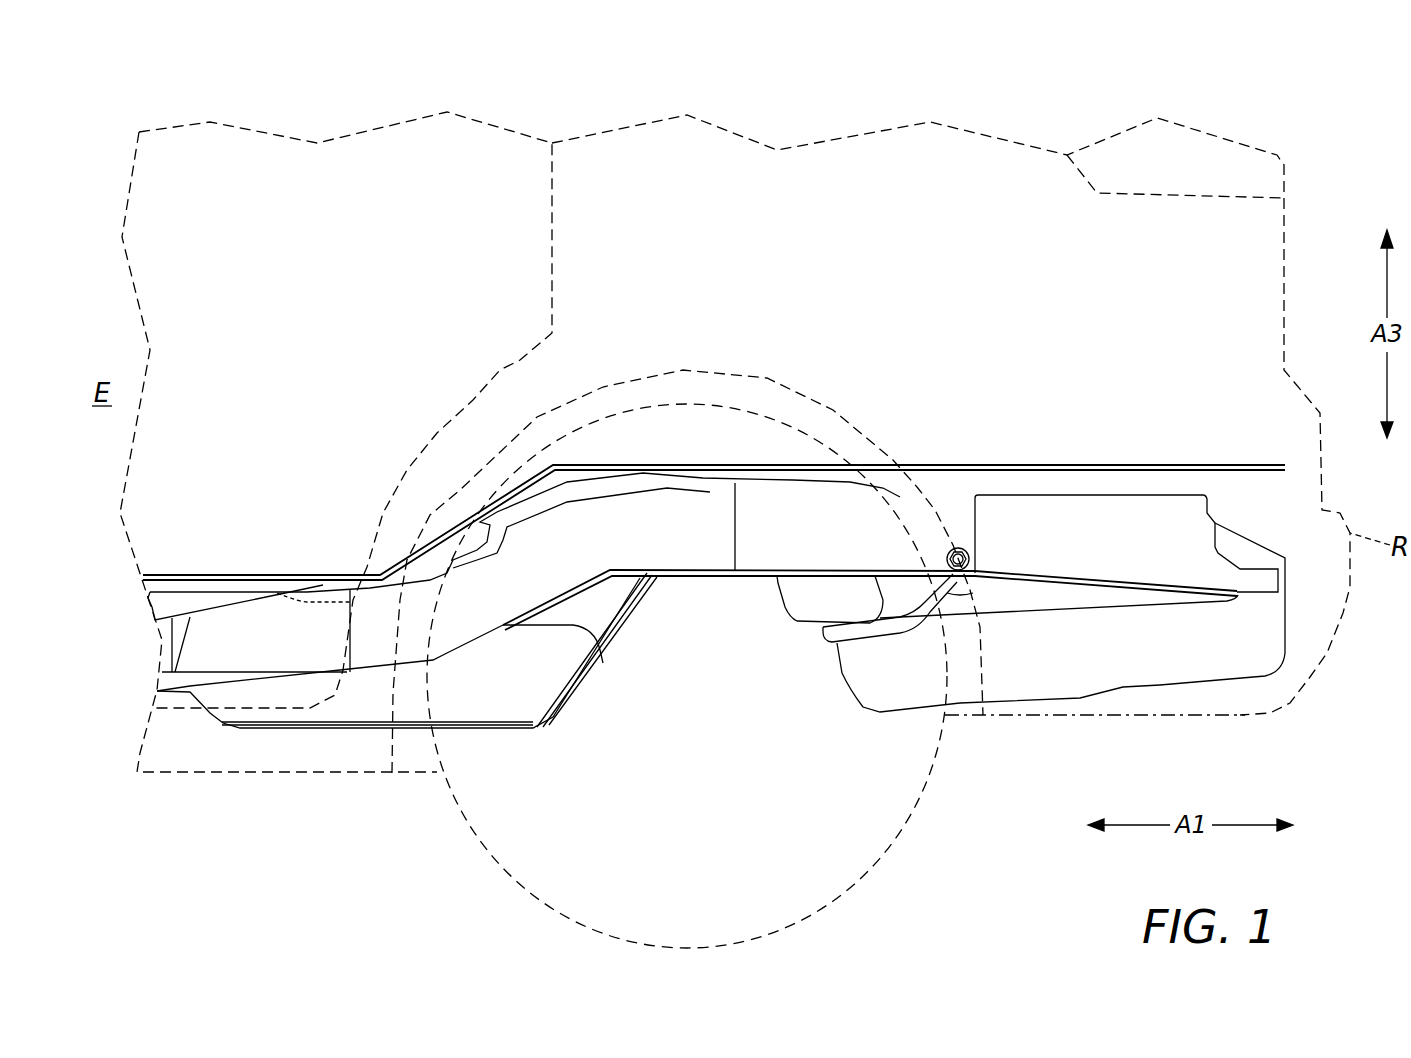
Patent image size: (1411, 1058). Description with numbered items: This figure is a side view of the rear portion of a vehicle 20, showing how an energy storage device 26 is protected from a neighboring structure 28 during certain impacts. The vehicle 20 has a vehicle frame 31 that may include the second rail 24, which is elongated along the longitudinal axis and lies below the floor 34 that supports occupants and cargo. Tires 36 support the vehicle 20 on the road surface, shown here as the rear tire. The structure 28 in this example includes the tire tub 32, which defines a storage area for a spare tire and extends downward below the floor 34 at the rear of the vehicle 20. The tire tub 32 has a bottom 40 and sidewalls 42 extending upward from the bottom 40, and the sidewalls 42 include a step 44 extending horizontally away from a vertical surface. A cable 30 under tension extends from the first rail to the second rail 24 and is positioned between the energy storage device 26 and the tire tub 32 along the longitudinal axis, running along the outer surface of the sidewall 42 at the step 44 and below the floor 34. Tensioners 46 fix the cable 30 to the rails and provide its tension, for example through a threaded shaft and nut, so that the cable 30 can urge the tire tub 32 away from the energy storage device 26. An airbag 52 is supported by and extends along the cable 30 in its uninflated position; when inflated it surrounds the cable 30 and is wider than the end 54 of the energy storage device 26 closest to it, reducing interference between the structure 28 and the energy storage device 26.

The vehicle 20 is at (352, 84).
The second rail 24 is at (768, 548).
The energy storage device 26 is at (507, 697).
The structure 28 is at (990, 740).
The cable 30 is at (947, 593).
The vehicle frame 31 is at (972, 395).
The tire tub 32 is at (1082, 653).
The floor 34 is at (690, 465).
The tires 36 is at (466, 838).
The bottom 40 is at (1083, 698).
The sidewalls 42 is at (840, 677).
The step 44 is at (822, 628).
The tensioners 46 is at (963, 548).
The airbag 52 is at (873, 633).
The end 54 is at (603, 663).